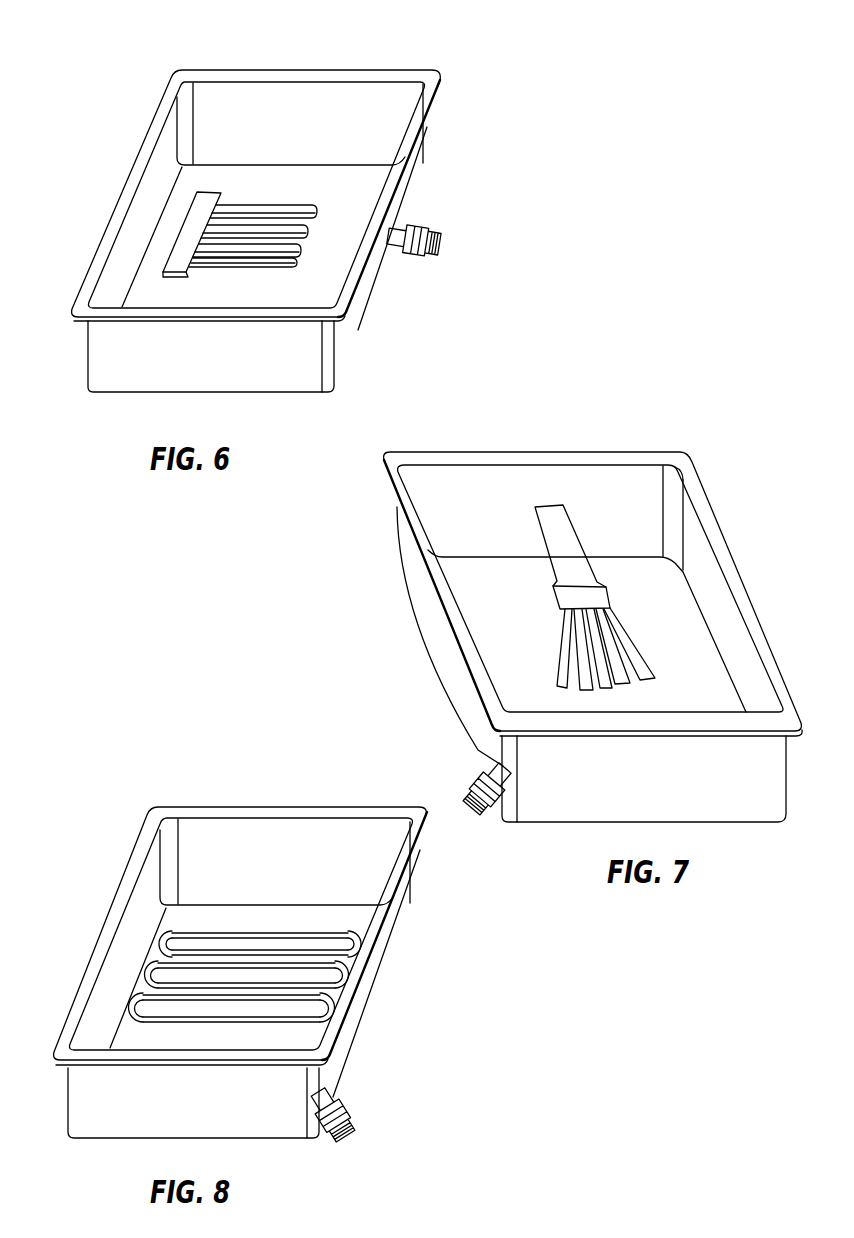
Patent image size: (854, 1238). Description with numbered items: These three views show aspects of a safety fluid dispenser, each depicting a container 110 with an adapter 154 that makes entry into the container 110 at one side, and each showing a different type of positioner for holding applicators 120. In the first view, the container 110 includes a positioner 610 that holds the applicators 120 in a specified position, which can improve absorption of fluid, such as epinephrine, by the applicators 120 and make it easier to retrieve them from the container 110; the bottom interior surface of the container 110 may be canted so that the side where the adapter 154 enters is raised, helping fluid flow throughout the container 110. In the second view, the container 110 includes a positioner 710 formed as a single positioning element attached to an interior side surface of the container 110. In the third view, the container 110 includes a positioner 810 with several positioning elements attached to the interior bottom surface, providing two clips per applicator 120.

In FIG. 6, the container 110 is at (281, 63).
In FIG. 7, the container 110 is at (686, 462).
In FIG. 8, the container 110 is at (240, 972).
In FIG. 6, the applicators 120 is at (300, 247).
In FIG. 7, the applicators 120 is at (593, 677).
In FIG. 8, the applicators 120 is at (217, 962).
In FIG. 6, the adapter 154 is at (410, 229).
In FIG. 7, the adapter 154 is at (478, 778).
In FIG. 8, the adapter 154 is at (343, 1102).
In FIG. 6, the positioner 610 is at (187, 224).
In FIG. 7, the positioner 710 is at (557, 517).
In FIG. 8, the positioner 810 is at (157, 940).